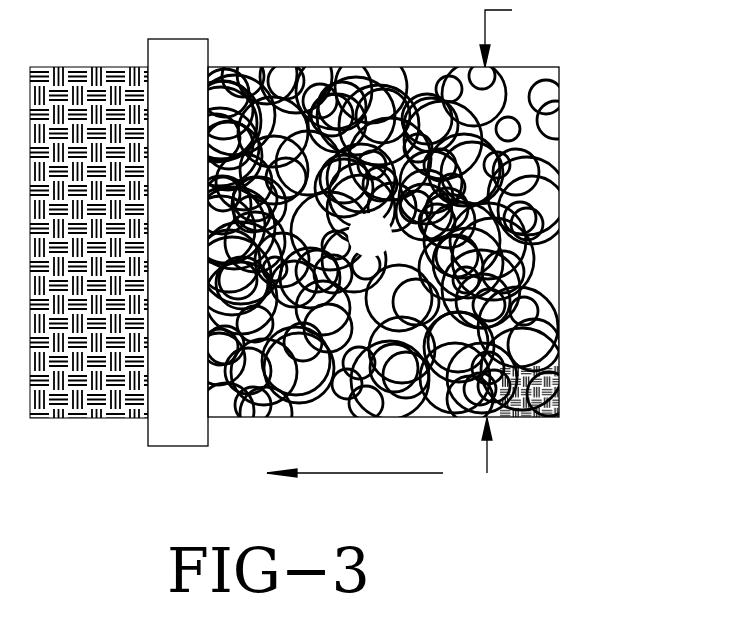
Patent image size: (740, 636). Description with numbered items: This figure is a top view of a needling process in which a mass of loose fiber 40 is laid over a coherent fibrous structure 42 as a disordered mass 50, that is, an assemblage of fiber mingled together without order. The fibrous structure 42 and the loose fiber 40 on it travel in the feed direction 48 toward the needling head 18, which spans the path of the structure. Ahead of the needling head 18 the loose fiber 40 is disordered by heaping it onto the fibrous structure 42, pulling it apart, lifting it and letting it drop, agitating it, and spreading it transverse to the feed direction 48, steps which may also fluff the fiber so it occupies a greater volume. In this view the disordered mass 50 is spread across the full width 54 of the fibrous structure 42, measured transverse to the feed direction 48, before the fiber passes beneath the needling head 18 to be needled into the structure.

The needling head 18 is at (193, 257).
The loose fiber 40 is at (558, 148).
The coherent fibrous structure 42 is at (559, 410).
The feed direction 48 is at (355, 473).
The disordered mass 50 is at (383, 247).
The full width 54 is at (519, 33).